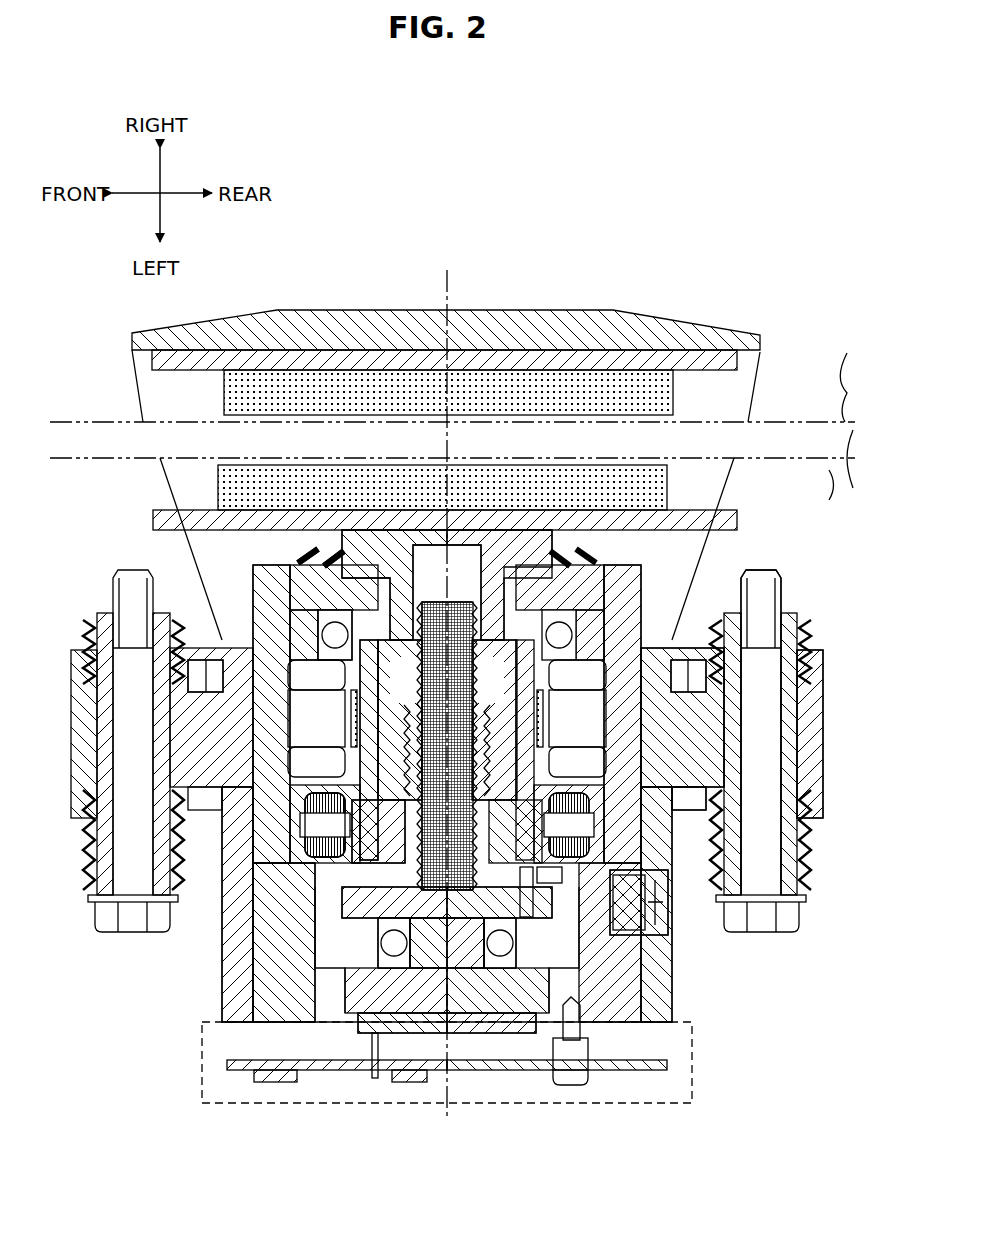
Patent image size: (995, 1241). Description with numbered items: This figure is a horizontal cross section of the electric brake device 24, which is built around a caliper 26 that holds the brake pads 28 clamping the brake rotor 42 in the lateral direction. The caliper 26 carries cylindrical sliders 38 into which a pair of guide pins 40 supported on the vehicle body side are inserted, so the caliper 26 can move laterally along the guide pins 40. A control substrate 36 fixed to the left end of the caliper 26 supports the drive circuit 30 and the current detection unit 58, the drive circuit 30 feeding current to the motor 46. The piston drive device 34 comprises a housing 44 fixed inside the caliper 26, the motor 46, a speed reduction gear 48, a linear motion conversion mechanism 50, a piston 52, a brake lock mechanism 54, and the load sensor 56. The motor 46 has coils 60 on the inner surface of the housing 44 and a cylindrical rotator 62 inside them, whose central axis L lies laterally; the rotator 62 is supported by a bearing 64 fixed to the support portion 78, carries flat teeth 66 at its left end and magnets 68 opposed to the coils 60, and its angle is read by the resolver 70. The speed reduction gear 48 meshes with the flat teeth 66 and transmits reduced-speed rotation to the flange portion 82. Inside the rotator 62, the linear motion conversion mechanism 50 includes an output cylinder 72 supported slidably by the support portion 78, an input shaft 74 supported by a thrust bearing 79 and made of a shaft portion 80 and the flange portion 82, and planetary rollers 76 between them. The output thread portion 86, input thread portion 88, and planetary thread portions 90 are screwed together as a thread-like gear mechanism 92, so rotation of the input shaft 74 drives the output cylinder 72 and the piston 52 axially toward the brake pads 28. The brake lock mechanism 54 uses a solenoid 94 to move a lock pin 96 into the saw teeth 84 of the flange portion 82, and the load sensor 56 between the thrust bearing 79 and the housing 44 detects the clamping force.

The electric brake device 24 is at (695, 306).
The caliper 26 is at (733, 556).
The brake pads 28 is at (673, 398).
The drive circuit 30 is at (402, 1083).
The piston drive device 34 is at (655, 606).
The control substrate 36 is at (642, 1104).
The sliders 38 is at (812, 766).
The guide pins 40 is at (768, 718).
The brake rotor 42 is at (847, 380).
The housing 44 is at (634, 628).
The motor 46 is at (622, 690).
The speed reduction gear 48 is at (603, 874).
The linear motion conversion mechanism 50 is at (600, 810).
The piston 52 is at (555, 540).
The brake lock mechanism 54 is at (665, 886).
The load sensor 56 is at (500, 970).
The current detection unit 58 is at (262, 1083).
The coils 60 is at (302, 678).
The rotator 62 is at (270, 902).
The bearing 64 is at (300, 560).
The flat teeth 66 is at (312, 900).
The magnets 68 is at (218, 668).
The resolver 70 is at (396, 872).
The output cylinder 72 is at (320, 833).
The input shaft 74 is at (352, 922).
The planetary rollers 76 is at (491, 700).
The support portion 78 is at (322, 624).
The thrust bearing 79 is at (370, 950).
The shaft portion 80 is at (466, 616).
The flange portion 82 is at (458, 992).
The saw teeth 84 is at (592, 1046).
The output thread portion 86 is at (358, 846).
The input thread portion 88 is at (432, 614).
The planetary thread portions 90 is at (412, 716).
The thread-like gear mechanism 92 is at (566, 905).
The solenoid 94 is at (614, 902).
The lock pin 96 is at (570, 890).
The axis L is at (452, 291).